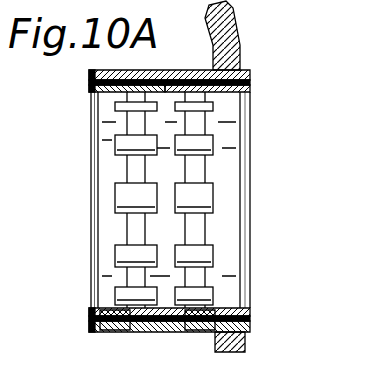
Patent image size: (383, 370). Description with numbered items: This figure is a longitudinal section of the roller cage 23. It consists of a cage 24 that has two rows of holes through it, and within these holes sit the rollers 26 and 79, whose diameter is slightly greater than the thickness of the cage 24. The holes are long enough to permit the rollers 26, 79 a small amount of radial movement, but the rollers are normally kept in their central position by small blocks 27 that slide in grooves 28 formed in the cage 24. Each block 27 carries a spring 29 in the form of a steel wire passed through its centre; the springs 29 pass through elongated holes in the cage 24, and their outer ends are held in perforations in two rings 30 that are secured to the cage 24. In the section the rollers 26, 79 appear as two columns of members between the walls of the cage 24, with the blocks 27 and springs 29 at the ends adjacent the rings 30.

The roller cage 23 is at (161, 185).
The cage 24 is at (108, 188).
The roller 26 is at (122, 147).
The block 27 is at (177, 72).
The groove 28 is at (124, 332).
The spring 29 is at (91, 80).
The ring 30 is at (91, 122).
The roller 79 is at (213, 136).